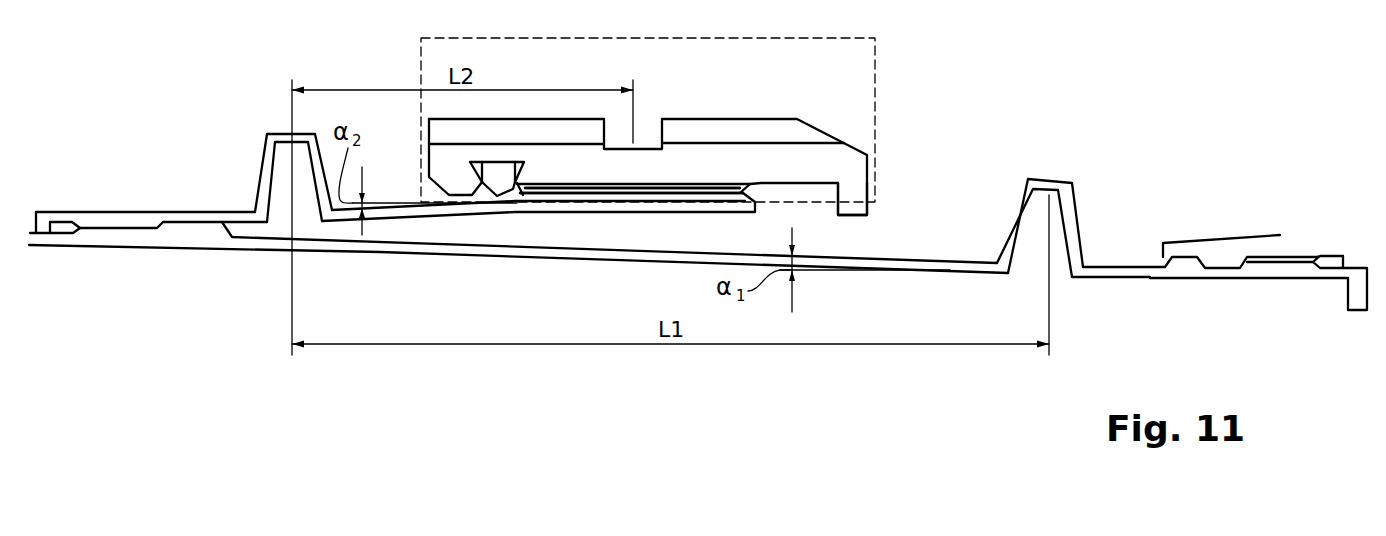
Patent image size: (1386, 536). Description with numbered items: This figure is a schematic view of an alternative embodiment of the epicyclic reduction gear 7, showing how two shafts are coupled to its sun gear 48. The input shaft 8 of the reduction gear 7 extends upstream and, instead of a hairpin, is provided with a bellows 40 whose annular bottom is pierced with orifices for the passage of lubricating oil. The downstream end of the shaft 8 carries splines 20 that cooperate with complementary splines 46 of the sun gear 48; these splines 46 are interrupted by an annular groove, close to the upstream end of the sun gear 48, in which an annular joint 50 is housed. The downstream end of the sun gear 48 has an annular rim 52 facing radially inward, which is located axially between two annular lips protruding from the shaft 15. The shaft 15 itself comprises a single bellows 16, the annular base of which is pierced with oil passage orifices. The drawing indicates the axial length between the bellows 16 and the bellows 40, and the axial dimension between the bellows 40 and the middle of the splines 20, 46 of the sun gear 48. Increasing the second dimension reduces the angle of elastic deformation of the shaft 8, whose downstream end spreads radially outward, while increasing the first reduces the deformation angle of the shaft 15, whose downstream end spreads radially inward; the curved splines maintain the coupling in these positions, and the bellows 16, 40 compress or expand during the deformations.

The reduction gear 7 is at (875, 53).
The input shaft 8 is at (192, 209).
The shaft 15 is at (1127, 279).
The bellows 16 is at (1072, 227).
The splines 20 is at (538, 202).
The bellows 40 is at (278, 133).
The complementary splines 46 is at (556, 192).
The sun gear 48 is at (747, 160).
The annular joint 50 is at (497, 172).
The annular rim 52 is at (850, 196).